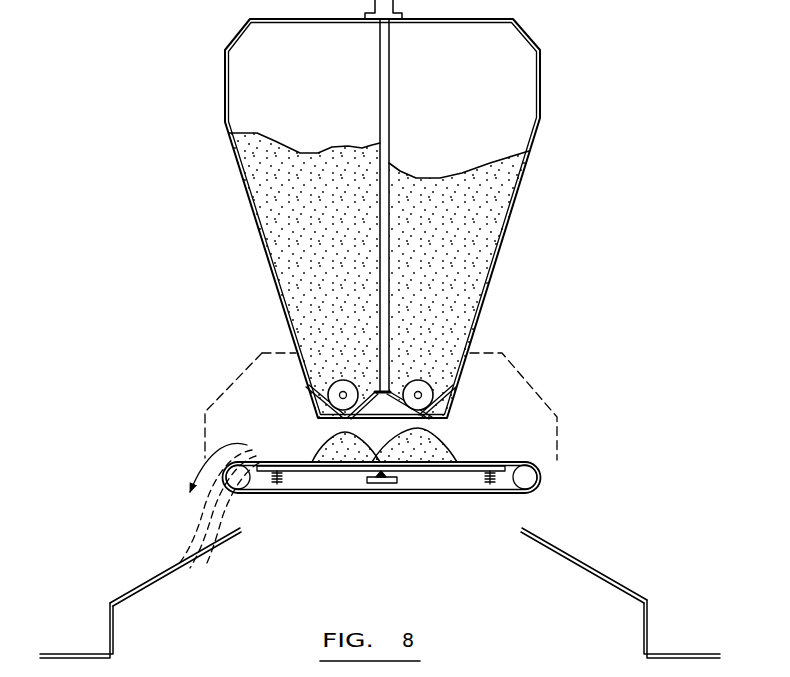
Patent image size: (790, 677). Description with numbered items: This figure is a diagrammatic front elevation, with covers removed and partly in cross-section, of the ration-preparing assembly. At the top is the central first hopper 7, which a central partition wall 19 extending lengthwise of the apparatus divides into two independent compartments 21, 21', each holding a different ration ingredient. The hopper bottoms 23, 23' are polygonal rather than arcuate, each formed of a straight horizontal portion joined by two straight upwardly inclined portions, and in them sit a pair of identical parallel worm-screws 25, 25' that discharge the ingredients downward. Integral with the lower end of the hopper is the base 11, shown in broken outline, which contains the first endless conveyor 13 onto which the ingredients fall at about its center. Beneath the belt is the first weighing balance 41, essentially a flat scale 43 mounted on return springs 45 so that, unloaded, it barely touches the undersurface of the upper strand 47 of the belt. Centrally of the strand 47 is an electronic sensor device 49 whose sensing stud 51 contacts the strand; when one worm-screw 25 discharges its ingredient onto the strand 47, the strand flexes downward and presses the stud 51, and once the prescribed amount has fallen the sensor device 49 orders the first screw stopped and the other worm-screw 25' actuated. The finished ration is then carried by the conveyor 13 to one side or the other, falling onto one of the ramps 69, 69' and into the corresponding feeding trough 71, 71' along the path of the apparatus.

The first hopper 7 is at (544, 142).
The central partition wall 19 is at (389, 123).
The compartment 21 is at (475, 284).
The compartment 21' is at (282, 275).
The bottom 23 is at (442, 402).
The bottom 23' is at (318, 402).
The worm-screw 25 is at (458, 366).
The worm-screw 25' is at (305, 366).
The base 11 is at (533, 383).
The first endless conveyor 13 is at (345, 497).
The first weighing balance 41 is at (425, 484).
The flat scale 43 is at (459, 466).
The return springs 45 is at (277, 485).
The upper strand 47 is at (297, 462).
The electronic sensor device 49 is at (382, 485).
The sensing stud 51 is at (384, 471).
The ramp 69 is at (584, 562).
The ramp 69' is at (175, 564).
The feeding trough 71 is at (682, 629).
The feeding trough 71' is at (76, 629).